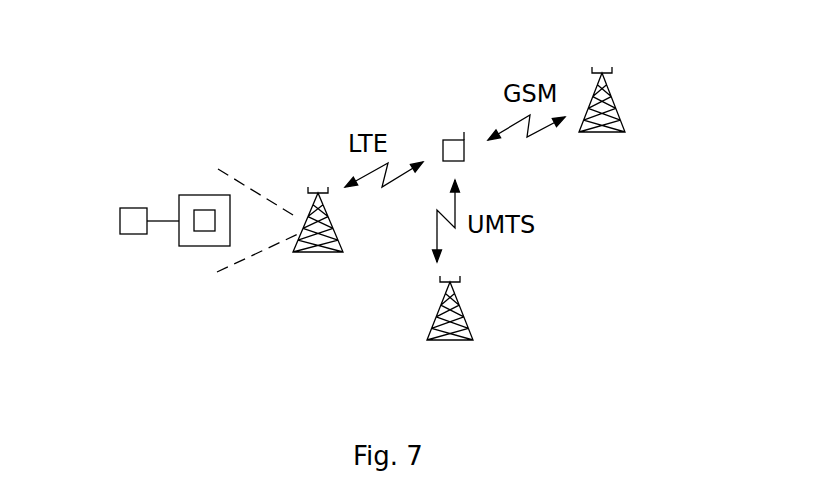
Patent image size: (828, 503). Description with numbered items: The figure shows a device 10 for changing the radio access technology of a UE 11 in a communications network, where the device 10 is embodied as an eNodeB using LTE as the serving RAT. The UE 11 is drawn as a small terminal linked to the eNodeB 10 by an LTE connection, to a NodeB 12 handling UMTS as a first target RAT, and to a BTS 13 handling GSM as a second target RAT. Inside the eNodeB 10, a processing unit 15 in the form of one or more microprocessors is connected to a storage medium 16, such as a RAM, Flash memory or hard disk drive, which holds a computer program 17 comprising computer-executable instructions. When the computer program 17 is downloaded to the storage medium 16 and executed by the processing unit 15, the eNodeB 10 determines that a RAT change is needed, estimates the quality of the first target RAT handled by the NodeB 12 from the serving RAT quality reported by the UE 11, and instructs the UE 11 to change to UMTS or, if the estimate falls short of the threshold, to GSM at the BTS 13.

The device for changing RAT 10 is at (302, 188).
The UE 11 is at (470, 138).
The NodeB 12 is at (465, 307).
The BTS 13 is at (618, 87).
The processing unit 15 is at (119, 223).
The storage medium 16 is at (188, 238).
The computer program 17 is at (206, 220).